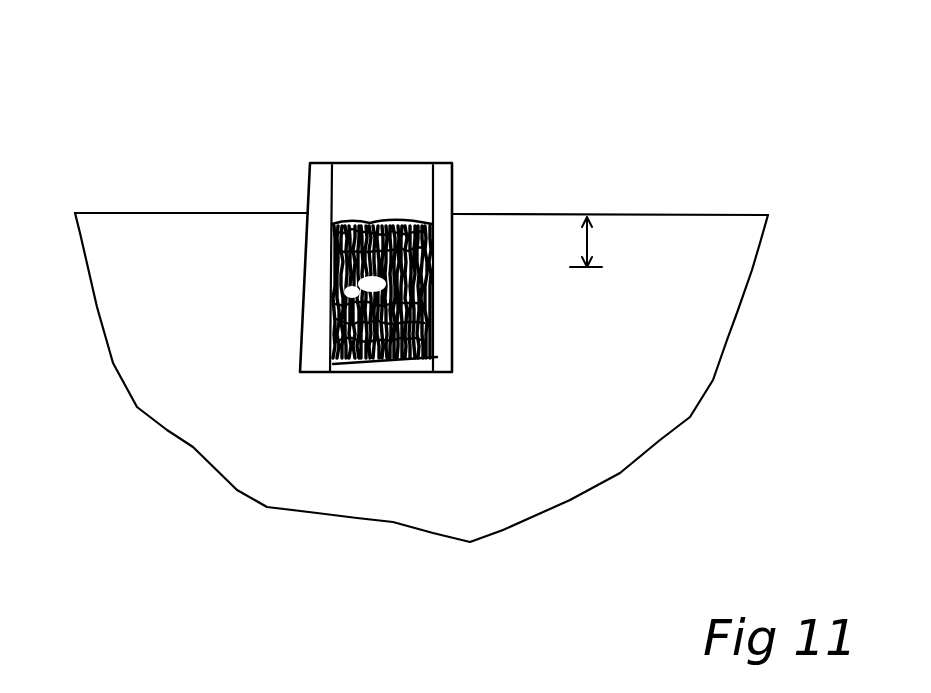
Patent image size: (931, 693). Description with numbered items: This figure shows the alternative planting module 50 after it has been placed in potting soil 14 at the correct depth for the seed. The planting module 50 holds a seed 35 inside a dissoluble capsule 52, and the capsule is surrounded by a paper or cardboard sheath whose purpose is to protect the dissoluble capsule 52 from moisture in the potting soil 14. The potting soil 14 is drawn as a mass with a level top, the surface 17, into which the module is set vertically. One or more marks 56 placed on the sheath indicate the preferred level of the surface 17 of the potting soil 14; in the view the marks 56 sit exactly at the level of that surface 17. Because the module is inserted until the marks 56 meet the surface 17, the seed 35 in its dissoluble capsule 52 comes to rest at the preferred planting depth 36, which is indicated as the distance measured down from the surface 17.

The planting module 50 is at (110, 90).
The potting soil 14 is at (218, 336).
The surface 17 is at (625, 213).
The marks 56 is at (305, 212).
The dissoluble capsule 52 is at (423, 250).
The seed 35 is at (420, 346).
The preferred depth 36 is at (592, 243).